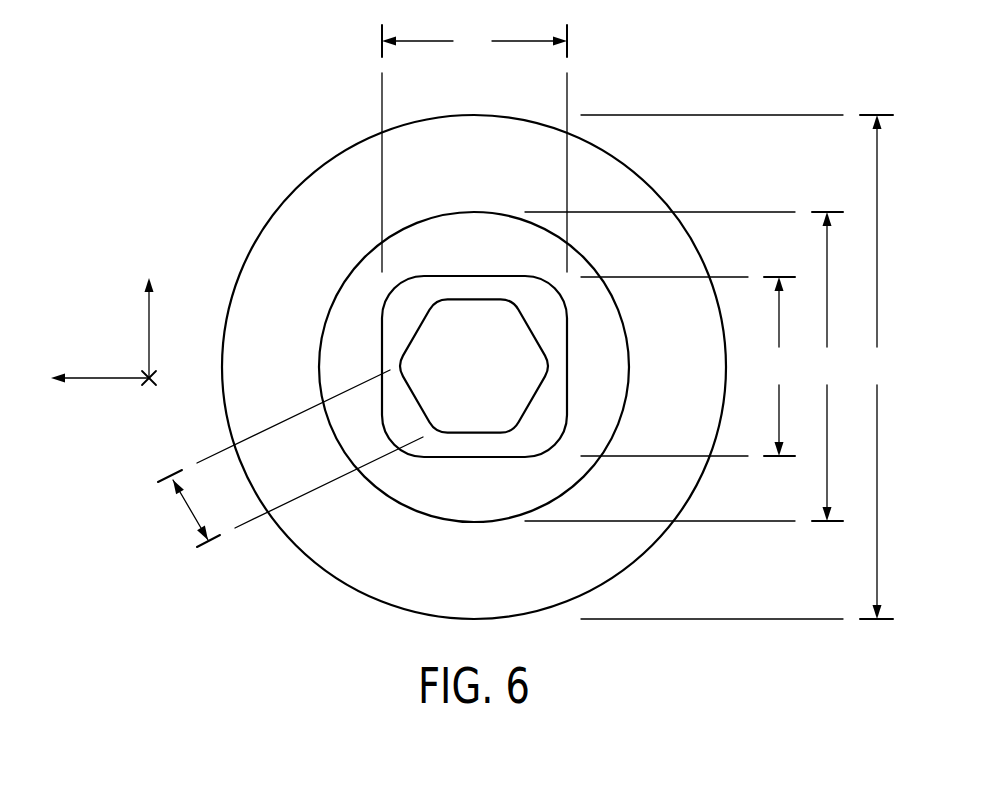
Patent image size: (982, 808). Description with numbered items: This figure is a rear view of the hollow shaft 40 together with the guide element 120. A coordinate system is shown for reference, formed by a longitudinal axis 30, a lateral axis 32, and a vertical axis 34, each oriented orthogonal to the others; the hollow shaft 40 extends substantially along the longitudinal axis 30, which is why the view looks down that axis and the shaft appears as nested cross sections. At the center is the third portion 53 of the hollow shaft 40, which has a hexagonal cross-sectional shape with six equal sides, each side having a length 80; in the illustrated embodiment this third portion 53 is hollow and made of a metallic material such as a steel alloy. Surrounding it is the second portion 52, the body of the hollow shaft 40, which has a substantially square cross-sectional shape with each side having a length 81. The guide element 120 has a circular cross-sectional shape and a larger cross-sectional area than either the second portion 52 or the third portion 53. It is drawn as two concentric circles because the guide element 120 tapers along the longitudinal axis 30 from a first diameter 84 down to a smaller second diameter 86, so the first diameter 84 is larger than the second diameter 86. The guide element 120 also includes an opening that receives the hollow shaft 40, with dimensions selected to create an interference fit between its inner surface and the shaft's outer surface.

The longitudinal axis 30 is at (151, 387).
The lateral axis 32 is at (104, 380).
The vertical axis 34 is at (148, 333).
The hollow shaft 40 is at (183, 190).
The second portion 52 is at (383, 337).
The third portion 53 is at (427, 332).
The length 80 is at (188, 515).
The length 81 is at (588, 240).
The first diameter 84 is at (737, 367).
The second diameter 86 is at (684, 366).
The guide element 120 is at (307, 180).